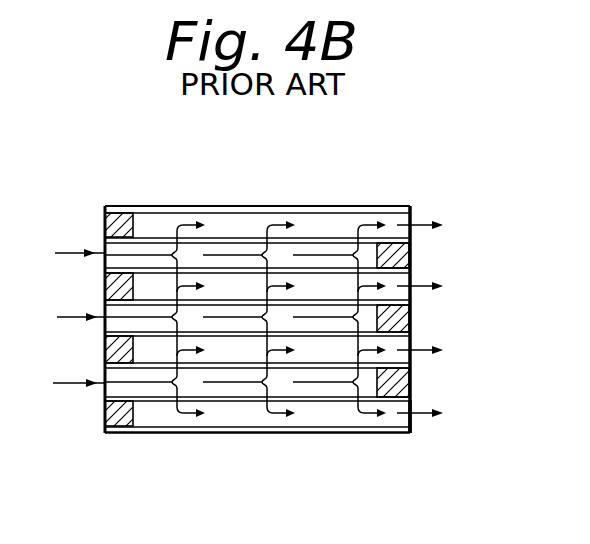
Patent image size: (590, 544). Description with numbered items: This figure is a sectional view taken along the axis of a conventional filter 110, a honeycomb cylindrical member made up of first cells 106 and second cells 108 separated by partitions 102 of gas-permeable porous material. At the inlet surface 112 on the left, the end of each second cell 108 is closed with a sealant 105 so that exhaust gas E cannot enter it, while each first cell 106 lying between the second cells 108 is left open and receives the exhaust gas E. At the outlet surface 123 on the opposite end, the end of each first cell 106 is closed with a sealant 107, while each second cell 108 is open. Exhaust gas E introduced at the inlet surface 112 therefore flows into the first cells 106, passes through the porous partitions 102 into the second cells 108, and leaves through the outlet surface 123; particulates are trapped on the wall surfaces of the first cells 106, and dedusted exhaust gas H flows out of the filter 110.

The partitions 102 is at (180, 207).
The sealant 105 is at (104, 222).
The first cells 106 is at (103, 325).
The sealant 107 is at (403, 320).
The second cells 108 is at (329, 414).
The filter 110 is at (327, 193).
The inlet surface 112 is at (84, 277).
The outlet surface 123 is at (416, 445).